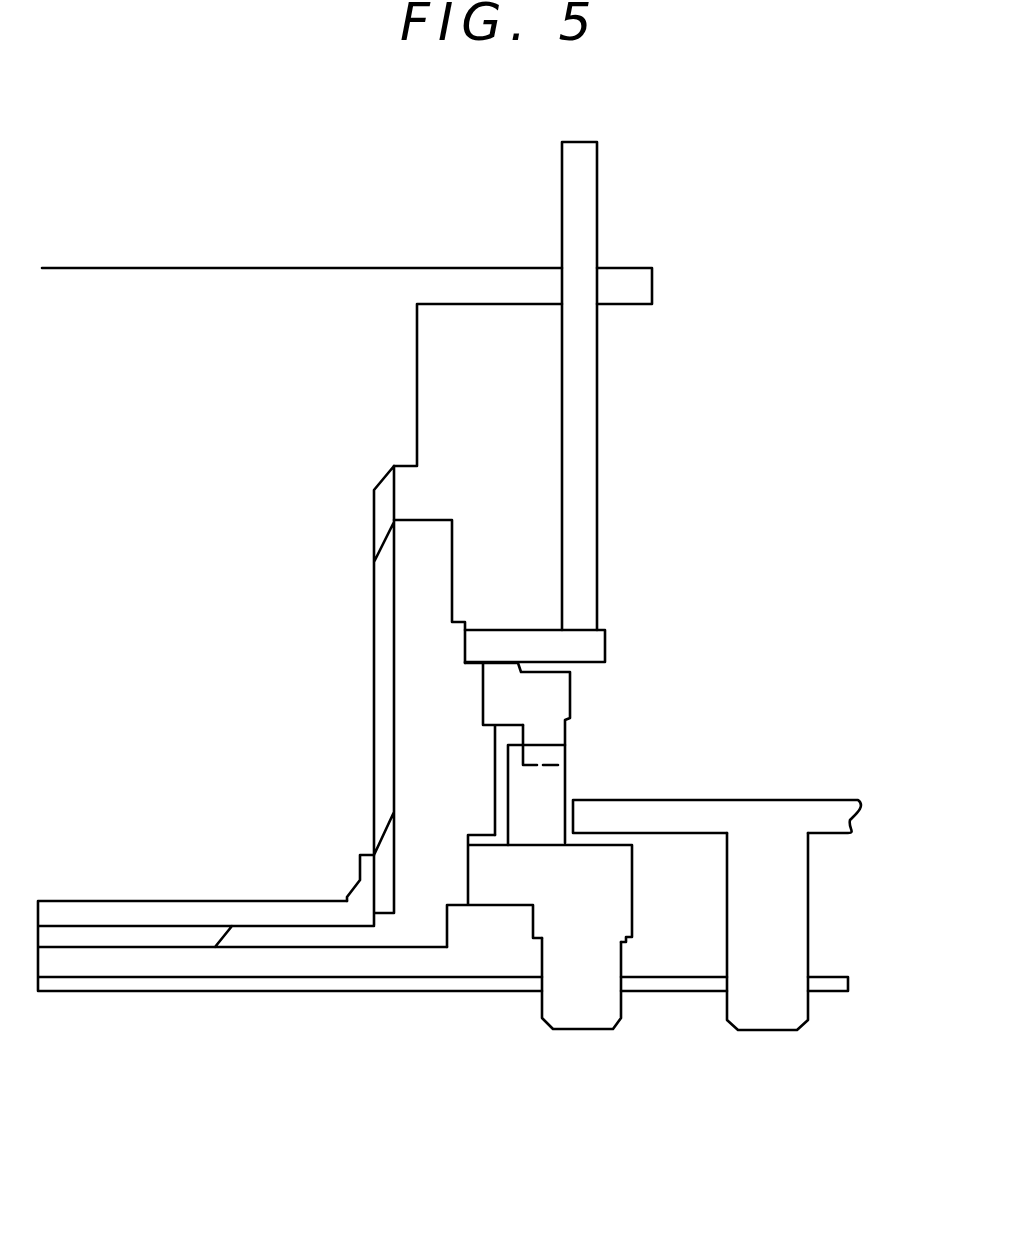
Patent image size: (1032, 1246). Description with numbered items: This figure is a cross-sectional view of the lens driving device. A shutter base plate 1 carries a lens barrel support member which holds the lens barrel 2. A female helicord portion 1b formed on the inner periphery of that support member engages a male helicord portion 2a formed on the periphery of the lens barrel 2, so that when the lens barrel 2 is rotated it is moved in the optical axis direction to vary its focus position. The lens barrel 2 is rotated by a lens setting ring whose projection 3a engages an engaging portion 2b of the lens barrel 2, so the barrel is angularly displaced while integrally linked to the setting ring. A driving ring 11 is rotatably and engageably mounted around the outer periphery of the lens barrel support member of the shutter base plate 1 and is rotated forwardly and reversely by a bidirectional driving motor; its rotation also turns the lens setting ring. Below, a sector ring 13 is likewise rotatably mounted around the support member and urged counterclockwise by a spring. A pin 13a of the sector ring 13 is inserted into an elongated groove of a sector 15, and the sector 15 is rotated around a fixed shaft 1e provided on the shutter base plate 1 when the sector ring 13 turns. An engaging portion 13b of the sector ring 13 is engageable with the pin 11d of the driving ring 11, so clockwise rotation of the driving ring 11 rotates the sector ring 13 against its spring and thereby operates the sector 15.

The shutter base plate 1 is at (425, 562).
The female helicord portion 1b is at (383, 883).
The fixed shaft 1e is at (775, 1015).
The lens barrel 2 is at (372, 293).
The male helicord portion 2a is at (375, 508).
The engaging portion 2b is at (528, 283).
The projection 3a is at (582, 163).
The driving ring 11 is at (550, 695).
The pin 11d is at (546, 736).
The sector ring 13 is at (498, 873).
The pin 13a is at (583, 1012).
The engaging portion 13b is at (542, 788).
The sector 15 is at (245, 982).